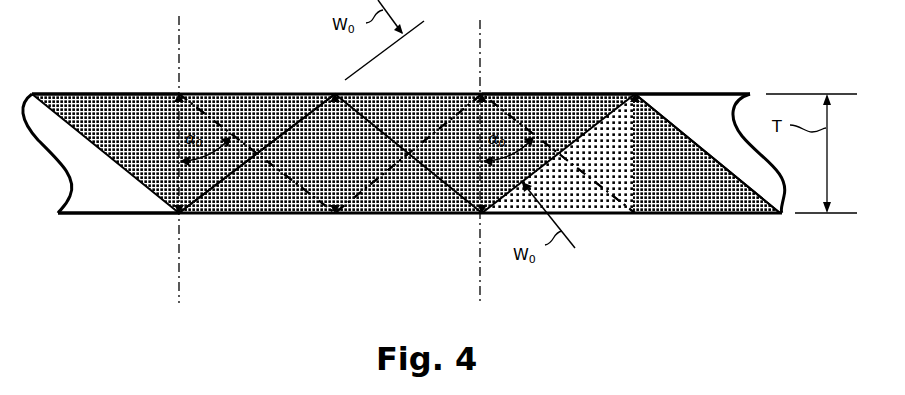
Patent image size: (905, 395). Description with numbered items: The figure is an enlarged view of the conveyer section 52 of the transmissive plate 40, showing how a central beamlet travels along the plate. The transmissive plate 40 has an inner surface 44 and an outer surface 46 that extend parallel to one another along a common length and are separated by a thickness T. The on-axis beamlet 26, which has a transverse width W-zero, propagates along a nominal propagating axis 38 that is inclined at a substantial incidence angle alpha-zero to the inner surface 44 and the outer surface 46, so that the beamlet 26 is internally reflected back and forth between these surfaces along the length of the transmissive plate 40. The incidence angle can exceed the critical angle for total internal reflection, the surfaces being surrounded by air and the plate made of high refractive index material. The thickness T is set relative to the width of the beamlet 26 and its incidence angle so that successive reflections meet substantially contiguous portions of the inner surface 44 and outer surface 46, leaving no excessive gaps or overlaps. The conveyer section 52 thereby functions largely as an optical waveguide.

The transmissive plate 40 is at (156, 92).
The inner surface 44 is at (128, 213).
The outer surface 46 is at (683, 96).
The conveyer section 52 is at (515, 94).
The on-axis beamlet 26 is at (279, 134).
The nominal propagating axis 38 is at (293, 183).